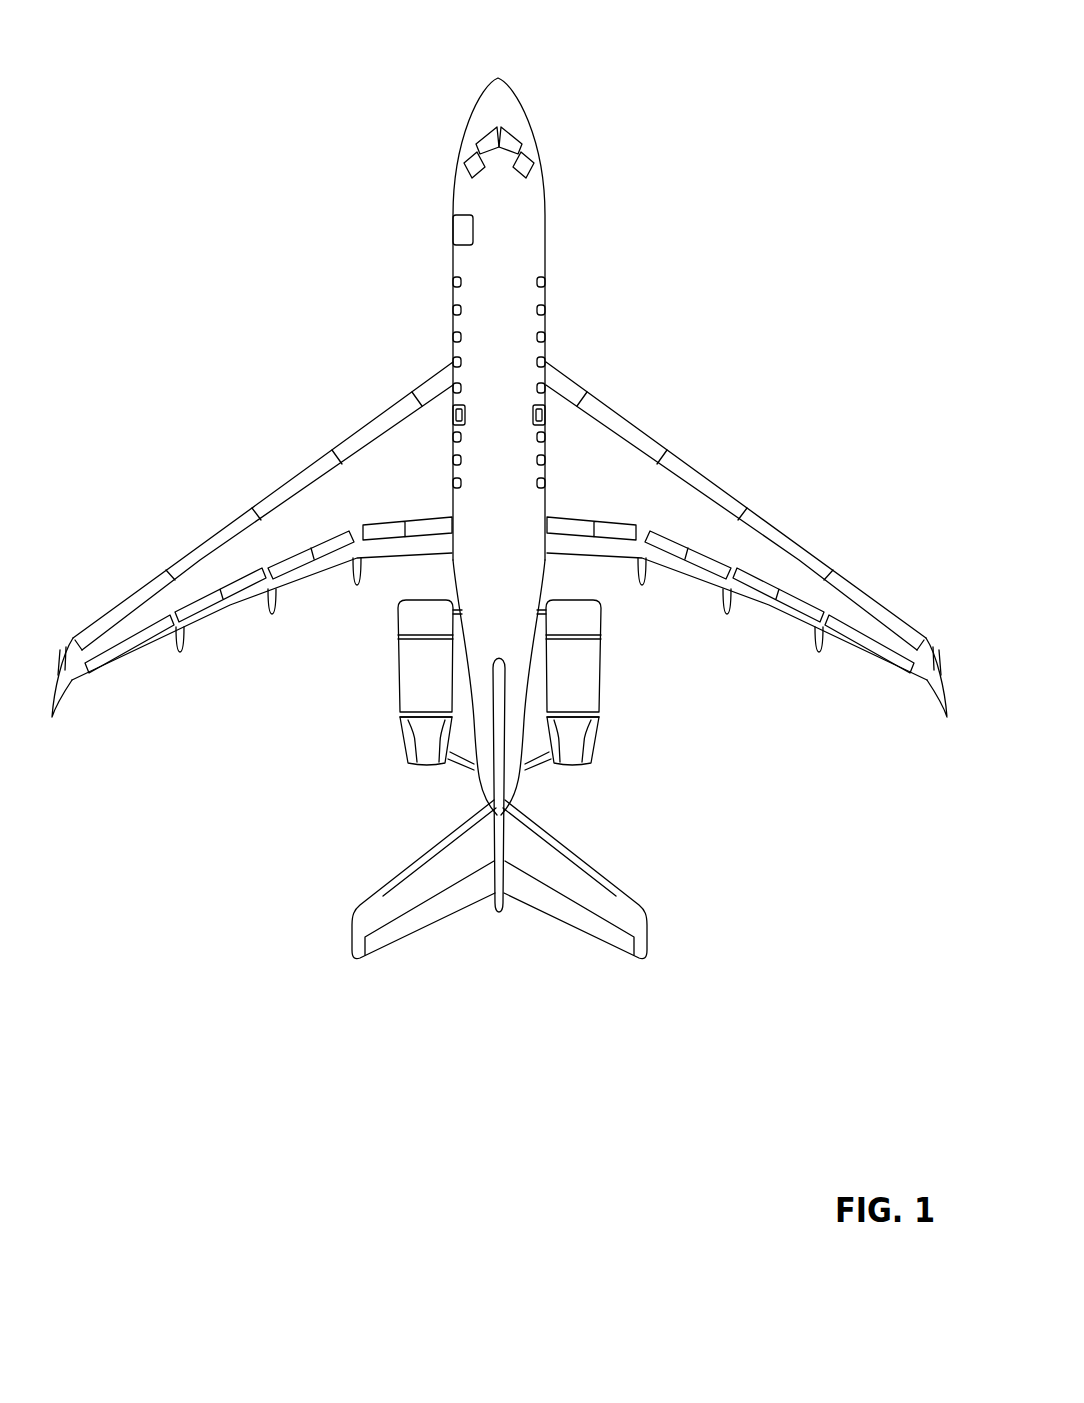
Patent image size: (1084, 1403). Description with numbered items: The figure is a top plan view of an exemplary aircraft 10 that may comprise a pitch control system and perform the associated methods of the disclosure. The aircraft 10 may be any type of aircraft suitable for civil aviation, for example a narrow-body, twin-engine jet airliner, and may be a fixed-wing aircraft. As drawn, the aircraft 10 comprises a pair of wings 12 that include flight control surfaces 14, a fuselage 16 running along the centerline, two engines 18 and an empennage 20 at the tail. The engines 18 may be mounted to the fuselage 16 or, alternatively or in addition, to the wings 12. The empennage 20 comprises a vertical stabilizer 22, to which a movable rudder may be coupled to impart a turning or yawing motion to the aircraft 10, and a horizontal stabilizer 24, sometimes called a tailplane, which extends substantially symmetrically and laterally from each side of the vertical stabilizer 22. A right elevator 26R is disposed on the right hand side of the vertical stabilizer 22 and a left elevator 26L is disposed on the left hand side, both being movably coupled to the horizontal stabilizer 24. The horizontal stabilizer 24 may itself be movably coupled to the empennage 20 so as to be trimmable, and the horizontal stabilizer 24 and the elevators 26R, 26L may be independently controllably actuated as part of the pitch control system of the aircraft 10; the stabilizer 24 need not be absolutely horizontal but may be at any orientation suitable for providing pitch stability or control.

The aircraft 10 is at (247, 68).
The wings 12 is at (145, 412).
The flight control surfaces 14 is at (397, 548).
The fuselage 16 is at (516, 287).
The engines 18 is at (389, 699).
The empennage 20 is at (330, 875).
The vertical stabilizer 22 is at (495, 848).
The horizontal stabilizer 24 is at (442, 861).
The left elevator 26L is at (403, 923).
The right elevator 26R is at (597, 923).